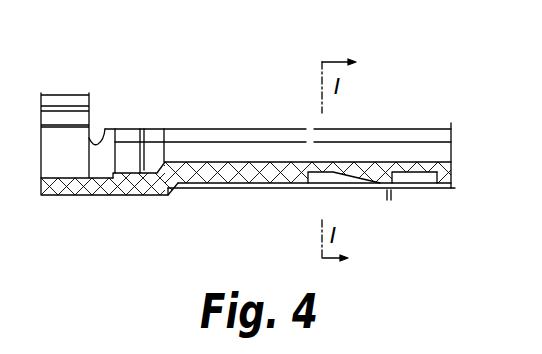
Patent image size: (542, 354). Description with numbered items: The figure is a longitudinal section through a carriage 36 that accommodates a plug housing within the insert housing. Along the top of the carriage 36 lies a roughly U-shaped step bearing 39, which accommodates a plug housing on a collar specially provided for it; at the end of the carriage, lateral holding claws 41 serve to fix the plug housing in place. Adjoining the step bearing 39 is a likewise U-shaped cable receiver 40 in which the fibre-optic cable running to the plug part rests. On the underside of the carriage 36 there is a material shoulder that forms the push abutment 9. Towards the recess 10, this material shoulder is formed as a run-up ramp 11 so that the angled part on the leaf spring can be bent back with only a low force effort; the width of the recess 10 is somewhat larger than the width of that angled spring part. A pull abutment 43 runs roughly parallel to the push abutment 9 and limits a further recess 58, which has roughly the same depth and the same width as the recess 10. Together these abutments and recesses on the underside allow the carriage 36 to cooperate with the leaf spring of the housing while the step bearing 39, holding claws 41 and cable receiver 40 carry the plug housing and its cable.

The holding claw 41 is at (60, 108).
The step bearing 39 is at (67, 160).
The carriage 36 is at (265, 102).
The cable receiver 40 is at (370, 160).
The further recess 58 is at (413, 160).
The recess 10 is at (315, 190).
The run-up ramp 11 is at (363, 188).
The push abutment 9 is at (398, 192).
The pull abutment 43 is at (425, 193).